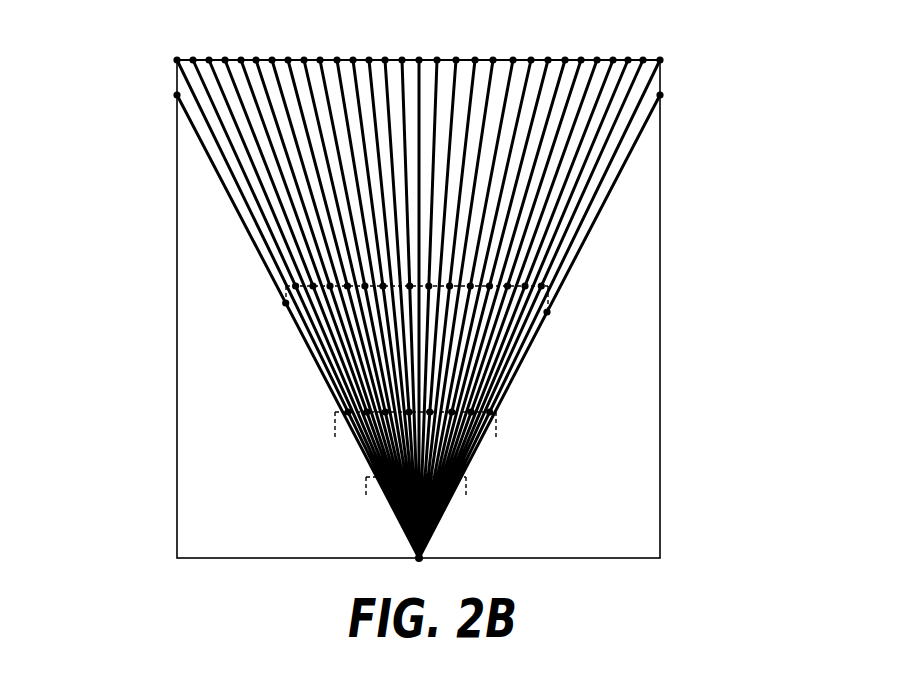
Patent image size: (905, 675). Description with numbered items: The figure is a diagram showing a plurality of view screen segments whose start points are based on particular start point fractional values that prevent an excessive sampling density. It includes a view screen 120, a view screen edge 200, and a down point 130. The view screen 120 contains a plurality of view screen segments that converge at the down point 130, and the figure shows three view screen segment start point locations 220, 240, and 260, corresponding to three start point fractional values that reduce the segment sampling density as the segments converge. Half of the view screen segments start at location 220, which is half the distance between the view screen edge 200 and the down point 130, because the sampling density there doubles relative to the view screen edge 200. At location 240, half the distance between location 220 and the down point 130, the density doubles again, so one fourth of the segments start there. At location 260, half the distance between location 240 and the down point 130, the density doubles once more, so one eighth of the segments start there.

The view screen 120 is at (331, 309).
The view screen edge 200 is at (532, 279).
The start point location 220 is at (465, 293).
The start point location 240 is at (464, 412).
The start point location 260 is at (463, 468).
The down point 130 is at (503, 520).